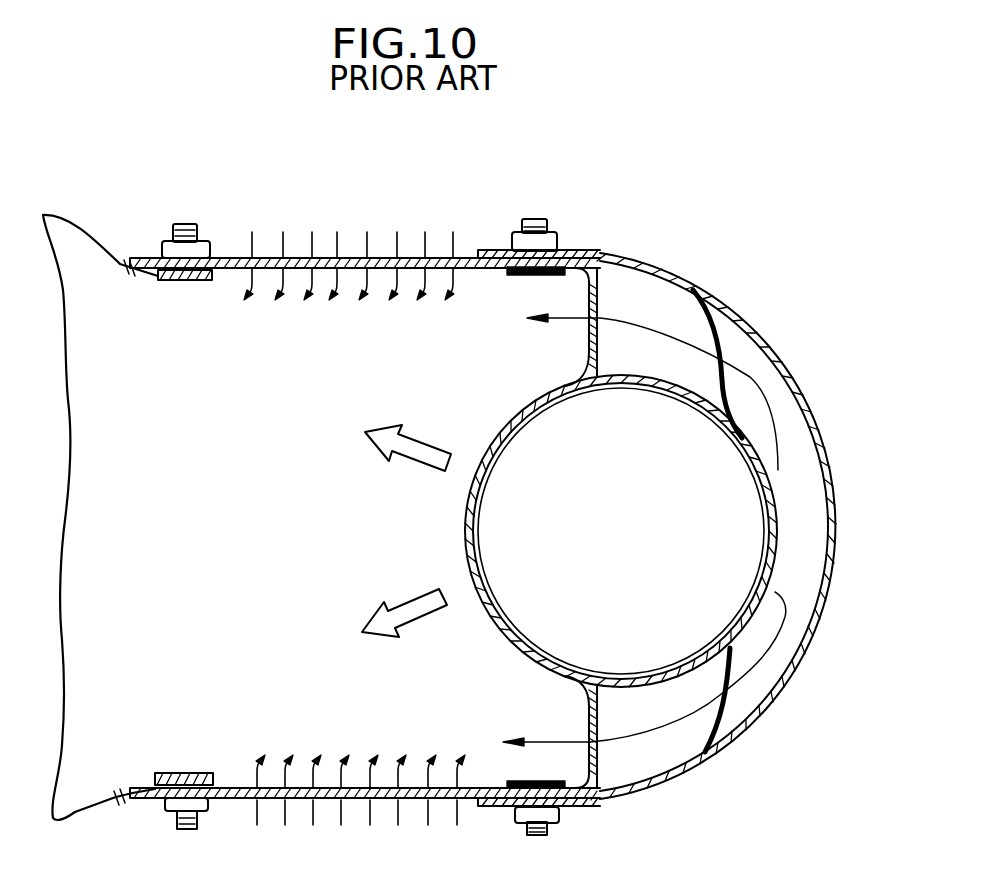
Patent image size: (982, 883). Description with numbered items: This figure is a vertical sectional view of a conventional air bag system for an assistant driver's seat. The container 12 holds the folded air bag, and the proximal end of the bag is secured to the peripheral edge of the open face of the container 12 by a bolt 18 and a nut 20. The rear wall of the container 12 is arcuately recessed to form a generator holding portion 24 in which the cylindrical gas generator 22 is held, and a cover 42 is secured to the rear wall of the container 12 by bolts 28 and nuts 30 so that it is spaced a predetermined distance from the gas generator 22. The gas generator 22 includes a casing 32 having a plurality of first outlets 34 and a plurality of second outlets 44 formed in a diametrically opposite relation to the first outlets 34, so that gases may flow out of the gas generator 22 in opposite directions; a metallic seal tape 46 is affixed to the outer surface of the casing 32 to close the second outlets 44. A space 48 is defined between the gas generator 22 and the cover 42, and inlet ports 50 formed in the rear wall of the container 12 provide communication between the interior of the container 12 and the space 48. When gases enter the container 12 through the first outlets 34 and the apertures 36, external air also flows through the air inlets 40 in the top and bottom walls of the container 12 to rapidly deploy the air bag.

The container 12 is at (475, 257).
The bolt 18 is at (180, 810).
The nut 20 is at (160, 803).
The gas generator 22 is at (665, 368).
The generator holding portion 24 is at (518, 400).
The bolt 28 is at (570, 200).
The nut 30 is at (500, 840).
The casing 32 is at (661, 675).
The first outlets 34 is at (492, 478).
The apertures 36 is at (482, 662).
The air inlets 40 is at (435, 845).
The cover 42 is at (793, 683).
The second outlets 44 is at (758, 481).
The metallic seal tape 46 is at (777, 495).
The space 48 is at (690, 757).
The inlet ports 50 is at (700, 257).